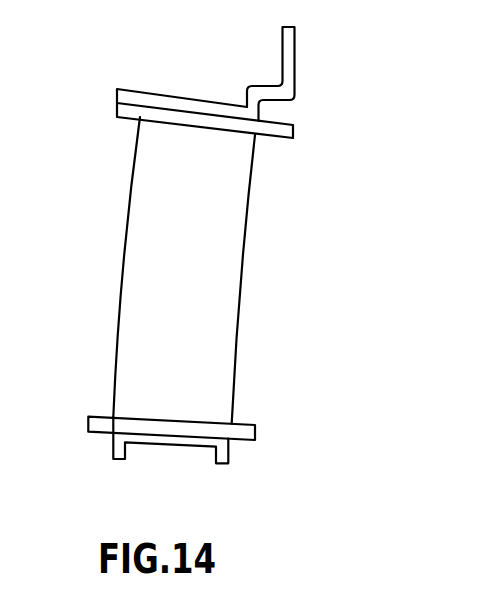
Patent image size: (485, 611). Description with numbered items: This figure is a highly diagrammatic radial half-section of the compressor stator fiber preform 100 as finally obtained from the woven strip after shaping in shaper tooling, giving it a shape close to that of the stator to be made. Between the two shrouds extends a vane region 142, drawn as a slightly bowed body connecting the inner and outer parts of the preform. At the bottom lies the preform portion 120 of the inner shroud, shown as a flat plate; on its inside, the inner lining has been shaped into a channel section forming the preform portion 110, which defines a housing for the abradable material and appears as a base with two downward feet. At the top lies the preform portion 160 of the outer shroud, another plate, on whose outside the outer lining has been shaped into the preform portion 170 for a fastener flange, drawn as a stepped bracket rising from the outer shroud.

The fiber preform 100 is at (263, 231).
The preform portion defining a housing for the abradable material 110 is at (114, 451).
The preform portion of the inner shroud 120 is at (103, 423).
The body 142 is at (152, 247).
The preform portion of the outer shroud 160 is at (128, 112).
The preform portion for a fastener flange 170 is at (290, 55).